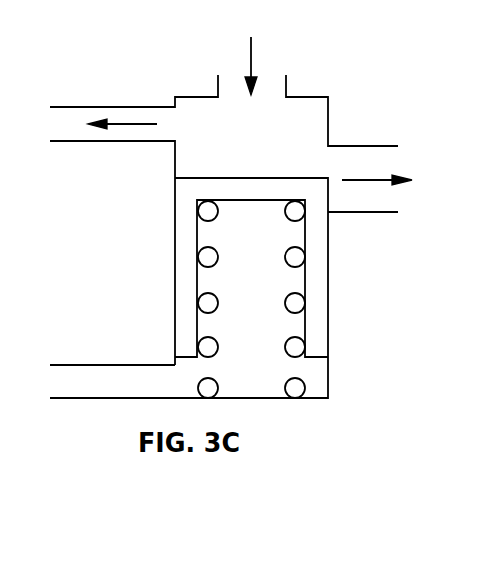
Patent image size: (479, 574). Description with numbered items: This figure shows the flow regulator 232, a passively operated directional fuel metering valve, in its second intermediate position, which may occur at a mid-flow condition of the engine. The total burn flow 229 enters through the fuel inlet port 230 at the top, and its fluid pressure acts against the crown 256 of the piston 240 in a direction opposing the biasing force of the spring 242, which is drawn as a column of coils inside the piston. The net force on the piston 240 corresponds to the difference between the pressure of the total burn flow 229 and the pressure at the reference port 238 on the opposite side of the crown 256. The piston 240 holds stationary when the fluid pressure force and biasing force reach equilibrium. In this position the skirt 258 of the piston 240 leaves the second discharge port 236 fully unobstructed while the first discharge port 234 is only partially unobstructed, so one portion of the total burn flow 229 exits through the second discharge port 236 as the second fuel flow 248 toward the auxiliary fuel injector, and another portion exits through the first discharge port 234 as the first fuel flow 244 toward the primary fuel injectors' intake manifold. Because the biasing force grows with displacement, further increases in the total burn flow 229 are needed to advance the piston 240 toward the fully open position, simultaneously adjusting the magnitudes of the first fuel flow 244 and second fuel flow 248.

The total burn flow 229 is at (250, 57).
The fuel inlet port 230 is at (218, 93).
The flow regulator 232 is at (343, 47).
The first discharge port 234 is at (330, 145).
The second discharge port 236 is at (173, 142).
The reference port 238 is at (50, 365).
The piston 240 is at (160, 258).
The spring 242 is at (295, 307).
The first fuel flow 244 is at (370, 180).
The second fuel flow 248 is at (118, 123).
The crown 256 is at (272, 188).
The skirt 258 is at (313, 257).